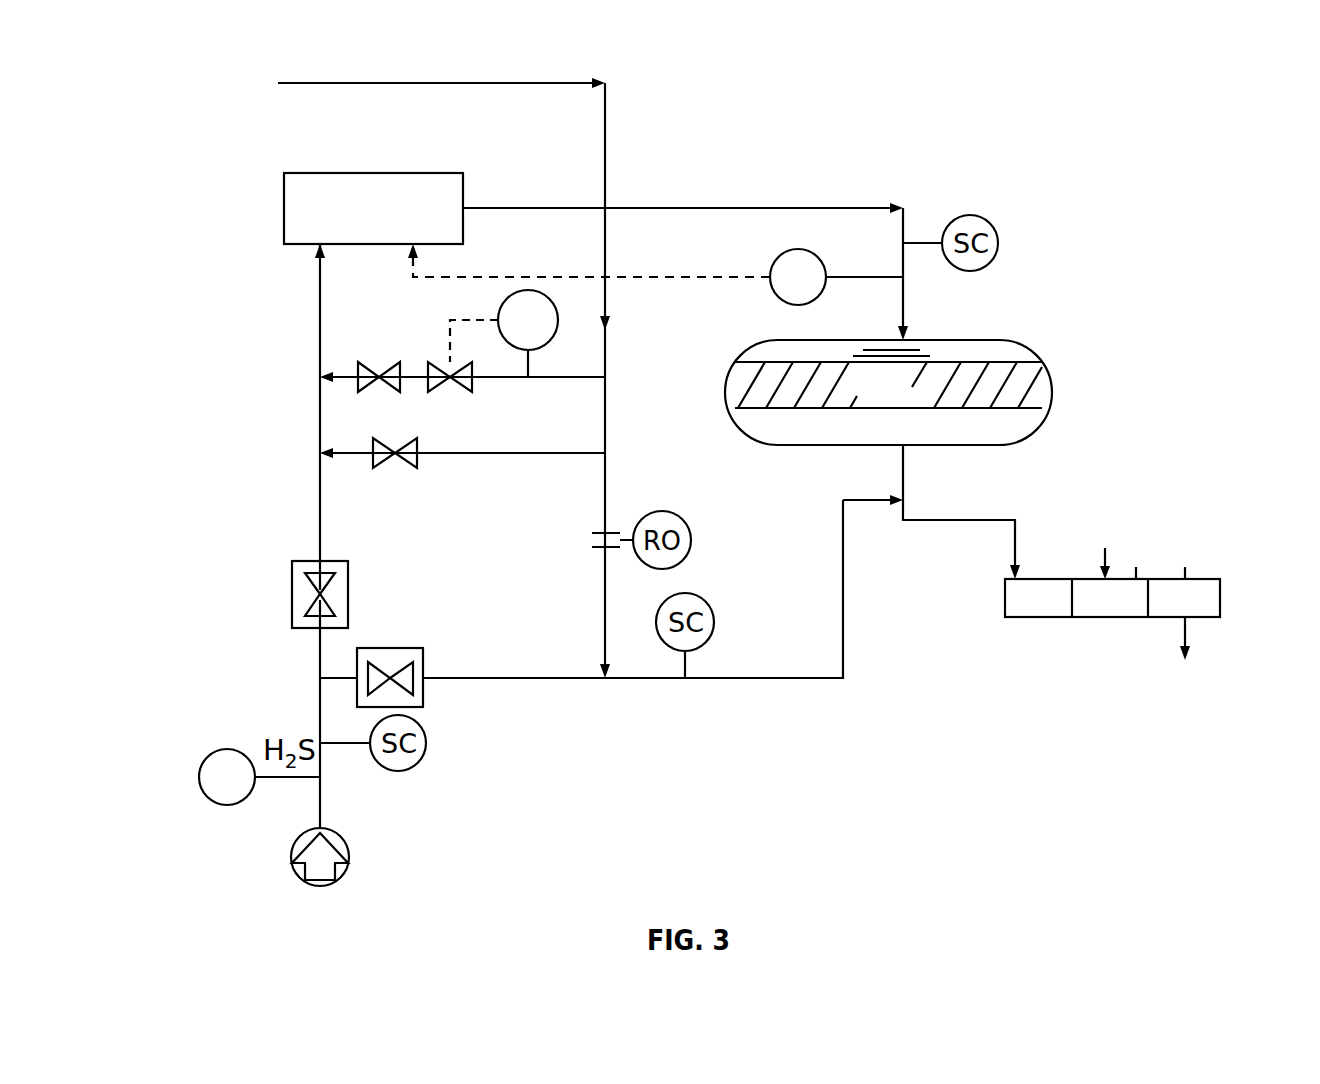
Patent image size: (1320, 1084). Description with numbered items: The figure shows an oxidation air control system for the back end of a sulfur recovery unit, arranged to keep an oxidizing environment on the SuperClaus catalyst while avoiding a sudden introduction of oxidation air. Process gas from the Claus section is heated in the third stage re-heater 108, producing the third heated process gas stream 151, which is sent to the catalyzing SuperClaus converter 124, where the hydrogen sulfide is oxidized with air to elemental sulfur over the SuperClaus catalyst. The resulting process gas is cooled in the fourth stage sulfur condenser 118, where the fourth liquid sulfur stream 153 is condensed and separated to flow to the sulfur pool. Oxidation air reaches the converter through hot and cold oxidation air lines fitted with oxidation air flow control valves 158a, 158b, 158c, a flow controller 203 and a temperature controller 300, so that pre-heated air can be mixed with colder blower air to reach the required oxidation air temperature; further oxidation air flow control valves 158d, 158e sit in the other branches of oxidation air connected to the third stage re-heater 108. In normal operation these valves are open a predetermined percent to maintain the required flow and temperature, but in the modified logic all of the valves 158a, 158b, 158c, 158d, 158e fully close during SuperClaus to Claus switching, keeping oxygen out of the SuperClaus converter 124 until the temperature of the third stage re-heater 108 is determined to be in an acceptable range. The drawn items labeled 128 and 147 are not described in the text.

The air feed line 128 is at (358, 80).
The third stage re-heater 108 is at (398, 224).
The flow controller 203 is at (528, 290).
The temperature controller 300 is at (780, 256).
The catalyzing SuperClaus converter 124 is at (911, 399).
The fourth stage sulfur condenser 118 is at (1134, 613).
The fourth liquid sulfur stream 153 is at (1190, 630).
The oxidation air flow control valve 158a is at (358, 365).
The oxidation air flow control valve 158b is at (417, 462).
The oxidation air flow control valve 158c is at (472, 387).
The oxidation air flow control valve 158d is at (292, 585).
The oxidation air flow control valve 158e is at (423, 692).
The quality controller (H2S analyzer) 147 is at (202, 755).
The third heated process gas stream 151 is at (292, 856).